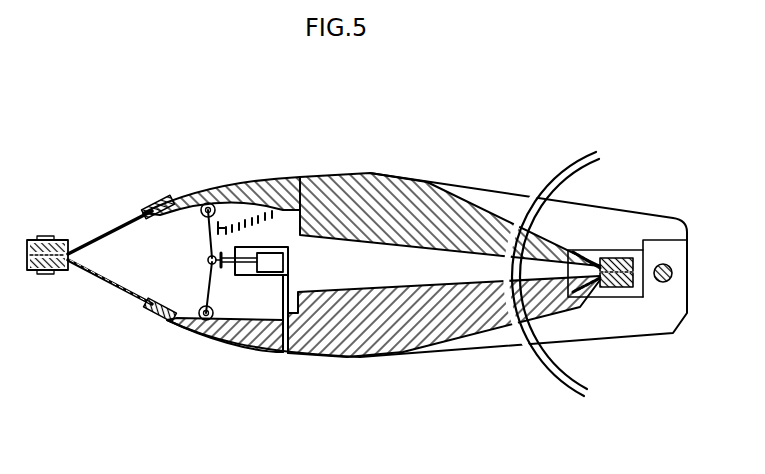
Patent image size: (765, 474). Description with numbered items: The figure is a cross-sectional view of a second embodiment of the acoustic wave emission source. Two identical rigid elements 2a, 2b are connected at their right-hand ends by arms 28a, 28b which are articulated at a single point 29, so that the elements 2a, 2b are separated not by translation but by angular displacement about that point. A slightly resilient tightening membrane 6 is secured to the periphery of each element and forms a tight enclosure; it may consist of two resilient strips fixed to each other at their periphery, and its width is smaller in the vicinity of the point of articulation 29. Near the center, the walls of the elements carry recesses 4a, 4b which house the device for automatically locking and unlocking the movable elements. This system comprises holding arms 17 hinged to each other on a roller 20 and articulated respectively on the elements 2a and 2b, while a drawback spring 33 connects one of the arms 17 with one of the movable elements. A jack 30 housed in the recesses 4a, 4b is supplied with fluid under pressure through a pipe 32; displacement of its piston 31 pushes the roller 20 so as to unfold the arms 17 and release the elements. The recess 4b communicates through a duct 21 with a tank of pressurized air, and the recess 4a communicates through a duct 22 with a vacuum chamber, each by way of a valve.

The membrane 6 is at (117, 215).
The holding arms 17 is at (207, 250).
The drawback spring 33 is at (247, 217).
The recess 4a is at (293, 225).
The element 2a is at (403, 243).
The duct 22 is at (572, 178).
The arm 28a is at (620, 223).
The point of articulation 29 is at (664, 262).
The roller 20 is at (207, 260).
The piston 31 is at (228, 272).
The jack 30 is at (258, 300).
The pipe 32 is at (297, 310).
The recess 4b is at (267, 278).
The element 2b is at (405, 305).
The duct 21 is at (560, 378).
The arm 28b is at (628, 318).